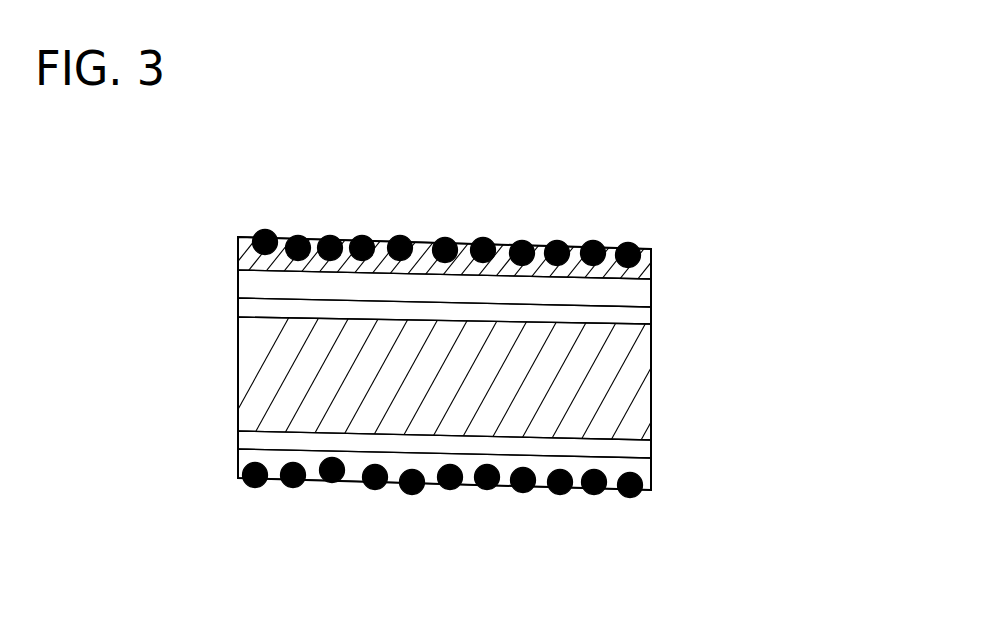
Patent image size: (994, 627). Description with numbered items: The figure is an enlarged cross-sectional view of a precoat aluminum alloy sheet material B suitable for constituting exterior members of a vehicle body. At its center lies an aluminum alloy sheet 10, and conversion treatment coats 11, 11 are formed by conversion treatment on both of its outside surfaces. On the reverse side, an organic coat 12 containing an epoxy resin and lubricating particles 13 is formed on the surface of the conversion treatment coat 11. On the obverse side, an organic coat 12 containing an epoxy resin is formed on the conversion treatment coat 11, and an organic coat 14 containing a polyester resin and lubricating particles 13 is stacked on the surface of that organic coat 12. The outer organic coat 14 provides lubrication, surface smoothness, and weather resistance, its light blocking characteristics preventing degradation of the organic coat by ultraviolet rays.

The sheet material B is at (538, 212).
The aluminum alloy sheet 10 is at (636, 394).
The conversion treatment coat 11 is at (640, 320).
The organic coat 12 is at (633, 290).
The lubricating particles 13 is at (402, 236).
The organic coat 14 is at (247, 257).